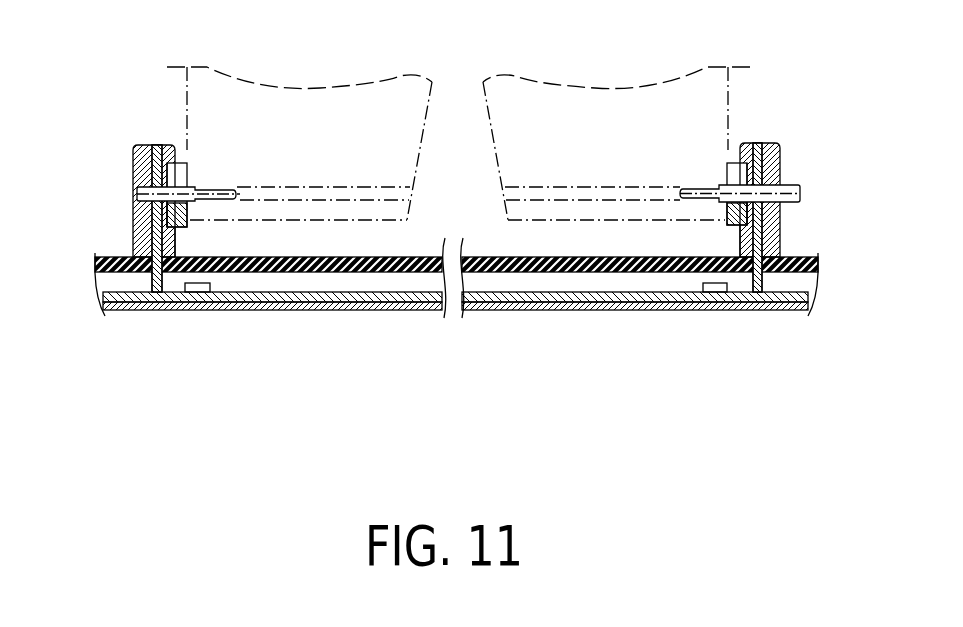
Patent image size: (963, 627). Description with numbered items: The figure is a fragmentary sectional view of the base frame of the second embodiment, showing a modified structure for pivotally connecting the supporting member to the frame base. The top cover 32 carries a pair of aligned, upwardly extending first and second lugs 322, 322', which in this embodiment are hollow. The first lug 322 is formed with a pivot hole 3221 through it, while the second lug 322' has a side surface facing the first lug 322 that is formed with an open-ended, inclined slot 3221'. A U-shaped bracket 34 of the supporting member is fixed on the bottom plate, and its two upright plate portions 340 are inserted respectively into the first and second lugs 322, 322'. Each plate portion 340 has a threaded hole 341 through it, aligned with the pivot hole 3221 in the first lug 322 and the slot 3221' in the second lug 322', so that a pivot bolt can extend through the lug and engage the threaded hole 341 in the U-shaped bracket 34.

The top cover 32 is at (95, 253).
The U-shaped bracket 34 is at (307, 294).
The first lug 322 is at (804, 166).
The second lug 322' is at (113, 166).
The pivot hole 3221 is at (616, 120).
The slot 3221' is at (299, 119).
The plate portion 340 is at (137, 222).
The threaded hole 341 is at (137, 192).